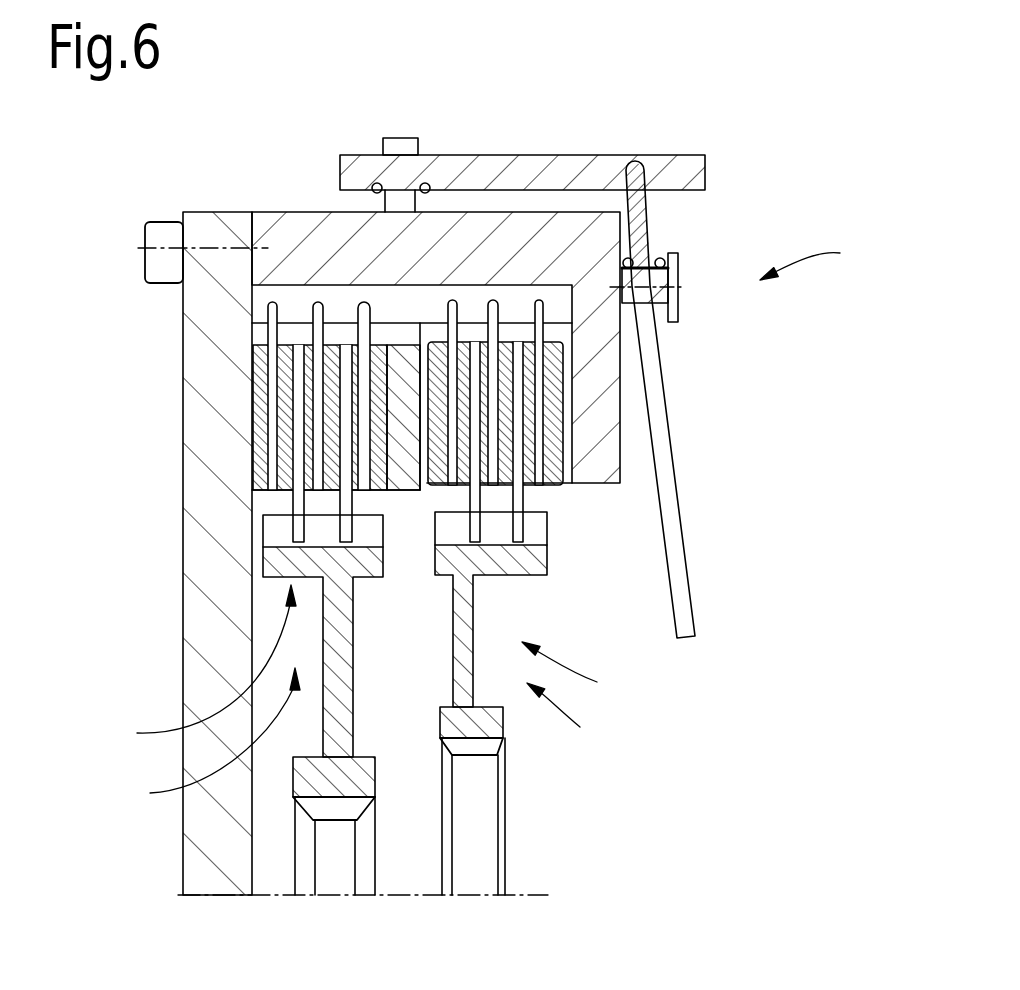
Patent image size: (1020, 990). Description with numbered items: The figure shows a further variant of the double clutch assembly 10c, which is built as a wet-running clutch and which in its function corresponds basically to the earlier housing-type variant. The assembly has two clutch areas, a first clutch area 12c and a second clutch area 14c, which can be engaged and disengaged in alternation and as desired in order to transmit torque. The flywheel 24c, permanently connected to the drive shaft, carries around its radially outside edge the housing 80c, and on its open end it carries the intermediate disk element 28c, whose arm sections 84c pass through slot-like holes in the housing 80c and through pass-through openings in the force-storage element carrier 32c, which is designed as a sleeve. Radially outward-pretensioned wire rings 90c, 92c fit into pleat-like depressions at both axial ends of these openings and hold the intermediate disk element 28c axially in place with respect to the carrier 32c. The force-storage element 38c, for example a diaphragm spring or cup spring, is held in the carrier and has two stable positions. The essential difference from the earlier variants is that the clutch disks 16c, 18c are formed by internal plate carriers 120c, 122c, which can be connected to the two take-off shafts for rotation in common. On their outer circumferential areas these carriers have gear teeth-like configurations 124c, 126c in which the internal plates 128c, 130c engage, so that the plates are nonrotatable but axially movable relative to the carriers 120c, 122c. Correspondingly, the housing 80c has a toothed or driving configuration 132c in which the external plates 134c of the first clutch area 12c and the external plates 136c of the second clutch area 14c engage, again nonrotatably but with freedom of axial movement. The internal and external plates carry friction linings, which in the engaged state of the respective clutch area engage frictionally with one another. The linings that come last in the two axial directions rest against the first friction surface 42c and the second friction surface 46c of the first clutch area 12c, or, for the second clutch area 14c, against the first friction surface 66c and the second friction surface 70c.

The double clutch assembly 10c is at (826, 260).
The first clutch area 12c is at (194, 667).
The second clutch area 14c is at (584, 678).
The clutch disk 16c is at (202, 740).
The clutch disk 18c is at (570, 726).
The flywheel 24c is at (188, 655).
The intermediate disk element 28c is at (345, 448).
The force-storage element carrier 32c is at (623, 153).
The force-storage element 38c is at (672, 540).
The first friction surface 42c is at (405, 437).
The second friction surface 46c is at (395, 378).
The first friction surface 66c is at (560, 380).
The second friction surface 70c is at (427, 485).
The housing 80c is at (608, 417).
The arm sections 84c is at (410, 142).
The wire ring 90c is at (377, 183).
The wire ring 92c is at (430, 187).
The internal plate carrier 120c is at (293, 800).
The internal plate carrier 122c is at (467, 835).
The gear teeth-like configuration 124c is at (285, 548).
The gear teeth-like configuration 126c is at (548, 532).
The internal plates 128c is at (345, 523).
The internal plates 130c is at (485, 512).
The toothed driving configuration 132c is at (290, 307).
The external plates 134c is at (300, 370).
The external plates 136c is at (585, 312).